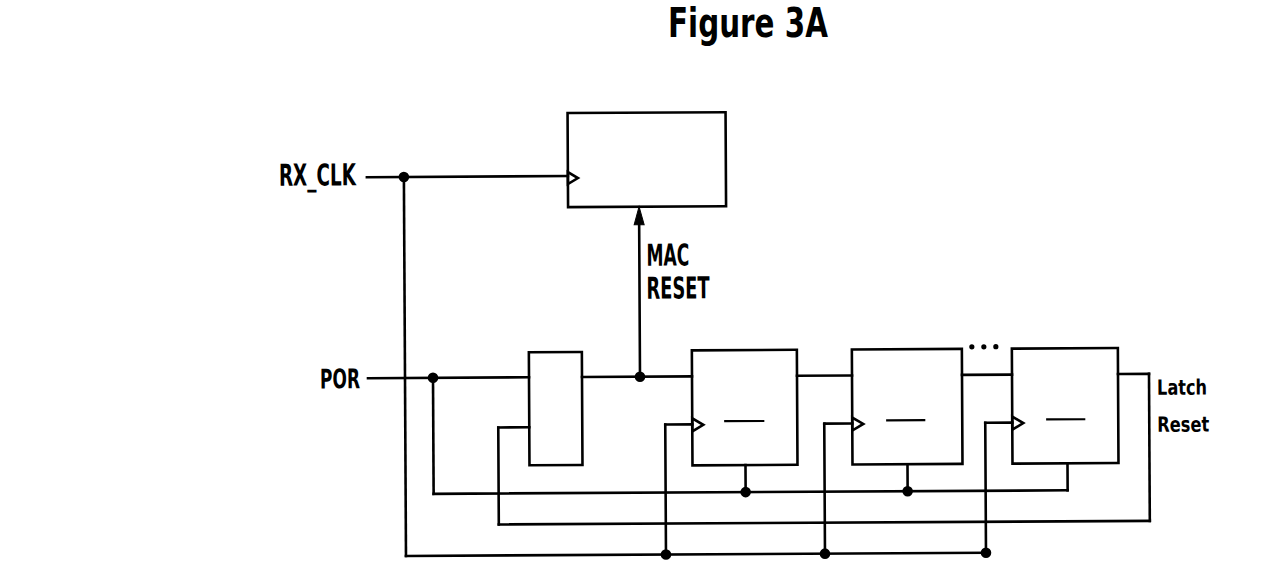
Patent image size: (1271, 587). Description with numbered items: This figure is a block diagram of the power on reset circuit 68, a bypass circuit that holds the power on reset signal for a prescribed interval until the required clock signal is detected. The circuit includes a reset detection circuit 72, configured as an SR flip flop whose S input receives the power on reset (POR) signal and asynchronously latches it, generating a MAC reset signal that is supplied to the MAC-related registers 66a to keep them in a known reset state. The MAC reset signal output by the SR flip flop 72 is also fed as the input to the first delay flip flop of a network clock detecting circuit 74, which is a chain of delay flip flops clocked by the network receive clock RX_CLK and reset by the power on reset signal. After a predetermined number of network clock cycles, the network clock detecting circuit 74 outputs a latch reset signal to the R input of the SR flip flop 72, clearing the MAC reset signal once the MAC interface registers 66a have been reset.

The MAC-related registers 66a is at (697, 114).
The power on reset circuit 68 is at (758, 315).
The reset detection circuit 72 is at (548, 353).
The network clock detecting circuit 74 is at (930, 322).